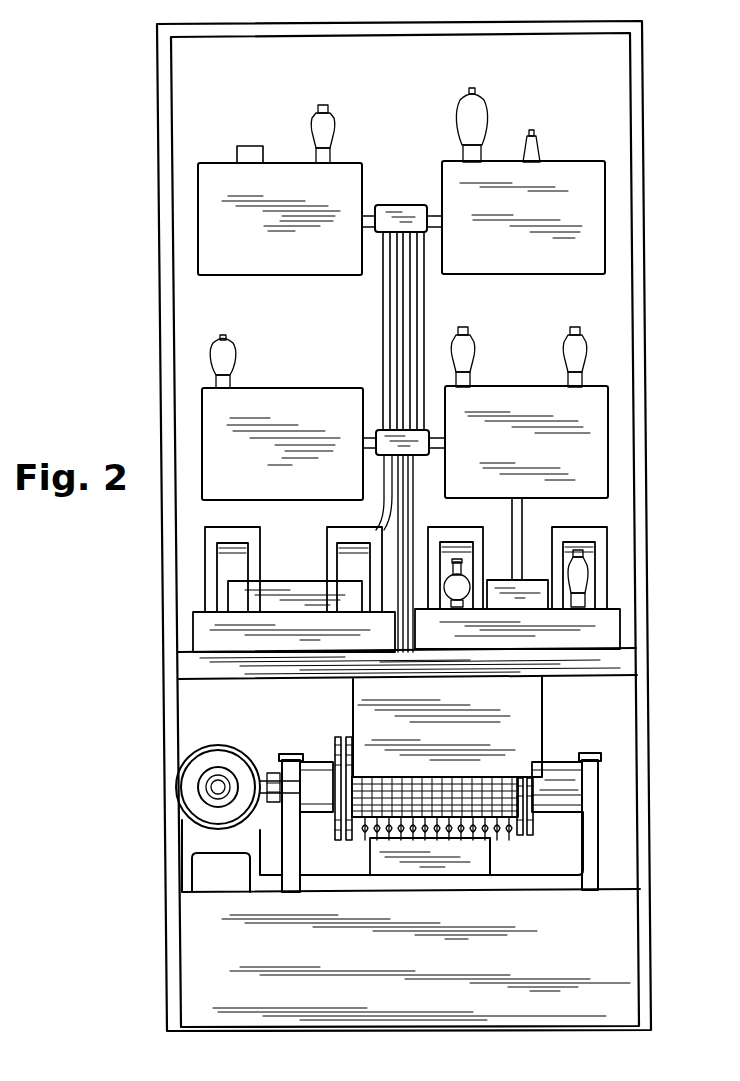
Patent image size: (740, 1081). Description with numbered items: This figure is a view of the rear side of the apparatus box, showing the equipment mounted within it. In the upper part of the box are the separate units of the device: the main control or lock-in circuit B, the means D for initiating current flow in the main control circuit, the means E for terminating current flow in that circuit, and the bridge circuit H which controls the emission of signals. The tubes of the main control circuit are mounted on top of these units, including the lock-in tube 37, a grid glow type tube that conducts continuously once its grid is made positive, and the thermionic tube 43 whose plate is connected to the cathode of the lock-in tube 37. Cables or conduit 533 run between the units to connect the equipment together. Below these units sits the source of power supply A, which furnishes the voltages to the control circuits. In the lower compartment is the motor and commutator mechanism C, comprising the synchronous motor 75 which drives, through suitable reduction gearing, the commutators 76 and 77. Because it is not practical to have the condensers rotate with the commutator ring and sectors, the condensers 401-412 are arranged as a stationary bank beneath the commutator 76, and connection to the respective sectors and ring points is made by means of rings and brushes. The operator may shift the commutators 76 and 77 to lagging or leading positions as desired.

The main control circuit B is at (326, 257).
The means for initiating current flow D is at (462, 253).
The means for terminating current flow E is at (288, 413).
The bridge circuit H is at (482, 413).
The cables or conduit 533 is at (384, 320).
The thermionic tube 43 is at (468, 352).
The lock-in tube 37 is at (572, 348).
The source of power supply A is at (218, 618).
The synchronous motor 75 is at (233, 758).
The synchronous motor and commutators C is at (323, 751).
The commutator 76 is at (367, 822).
The commutator 77 is at (492, 820).
The condensers 401-412 is at (424, 862).